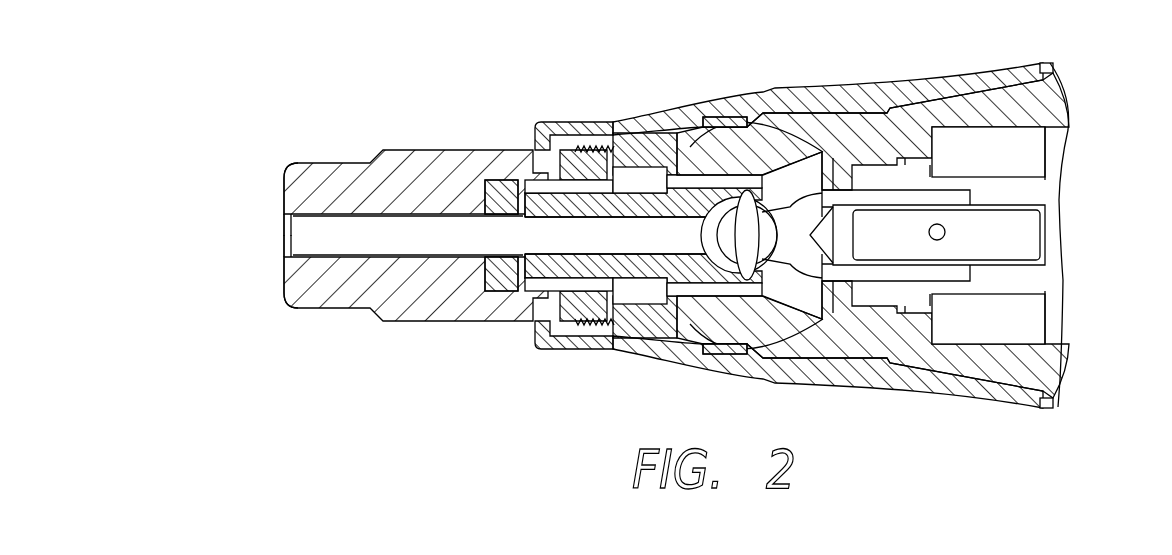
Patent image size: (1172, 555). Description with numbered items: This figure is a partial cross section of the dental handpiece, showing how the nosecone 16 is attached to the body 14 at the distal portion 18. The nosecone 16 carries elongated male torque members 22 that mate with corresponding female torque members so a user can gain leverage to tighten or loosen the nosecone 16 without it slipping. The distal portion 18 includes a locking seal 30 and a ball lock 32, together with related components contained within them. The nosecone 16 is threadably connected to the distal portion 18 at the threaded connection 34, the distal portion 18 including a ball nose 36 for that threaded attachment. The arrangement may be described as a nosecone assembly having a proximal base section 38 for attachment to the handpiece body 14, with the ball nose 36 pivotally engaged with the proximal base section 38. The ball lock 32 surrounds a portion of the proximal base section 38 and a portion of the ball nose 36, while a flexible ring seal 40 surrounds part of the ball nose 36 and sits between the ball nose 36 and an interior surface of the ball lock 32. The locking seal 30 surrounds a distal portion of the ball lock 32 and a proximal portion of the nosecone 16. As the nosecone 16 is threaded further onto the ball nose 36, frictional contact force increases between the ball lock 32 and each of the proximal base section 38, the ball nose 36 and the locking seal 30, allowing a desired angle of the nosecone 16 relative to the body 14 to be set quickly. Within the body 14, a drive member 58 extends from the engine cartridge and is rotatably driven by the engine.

The body 14 is at (1050, 62).
The nosecone 16 is at (290, 300).
The distal portion 18 is at (300, 165).
The male torque members 22 is at (460, 150).
The locking seal 30 is at (575, 120).
The ball lock 32 is at (990, 70).
The threaded connection 34 is at (590, 148).
The ball nose 36 is at (790, 126).
The proximal base section 38 is at (1060, 385).
The flexible ring seal 40 is at (720, 117).
The drive member 58 is at (1062, 195).